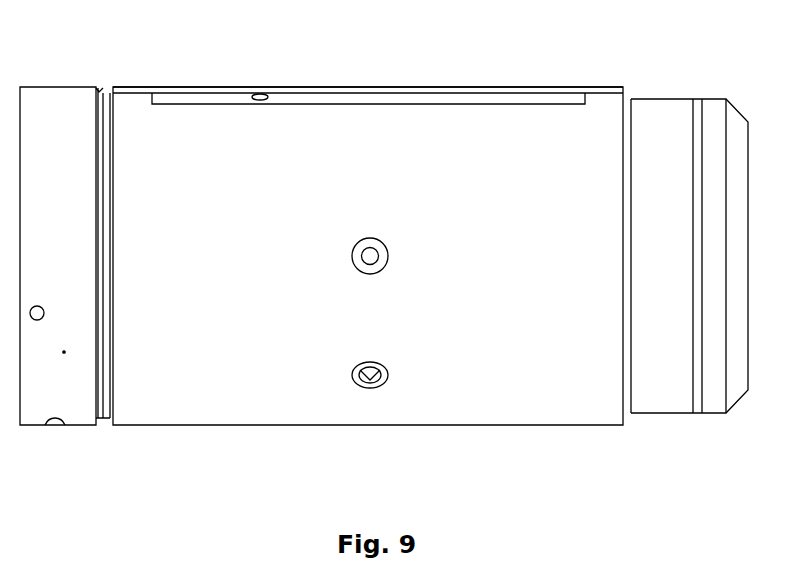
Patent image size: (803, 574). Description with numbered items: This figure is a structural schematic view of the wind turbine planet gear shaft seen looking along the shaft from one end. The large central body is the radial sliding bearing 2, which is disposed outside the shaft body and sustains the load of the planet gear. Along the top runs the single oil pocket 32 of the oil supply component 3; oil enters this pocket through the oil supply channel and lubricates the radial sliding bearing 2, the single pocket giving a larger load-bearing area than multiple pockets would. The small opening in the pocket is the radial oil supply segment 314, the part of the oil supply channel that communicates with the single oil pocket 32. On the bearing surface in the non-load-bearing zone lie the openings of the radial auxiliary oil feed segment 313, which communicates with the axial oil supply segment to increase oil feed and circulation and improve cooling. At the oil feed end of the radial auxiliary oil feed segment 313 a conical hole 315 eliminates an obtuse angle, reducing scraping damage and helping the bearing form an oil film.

The radial sliding bearing 2 is at (533, 400).
The oil supply component 3 is at (75, 400).
The single oil pocket 32 is at (440, 93).
The radial auxiliary oil feed segment 313 is at (362, 386).
The radial oil supply segment 314 is at (257, 87).
The conical hole 315 is at (380, 387).